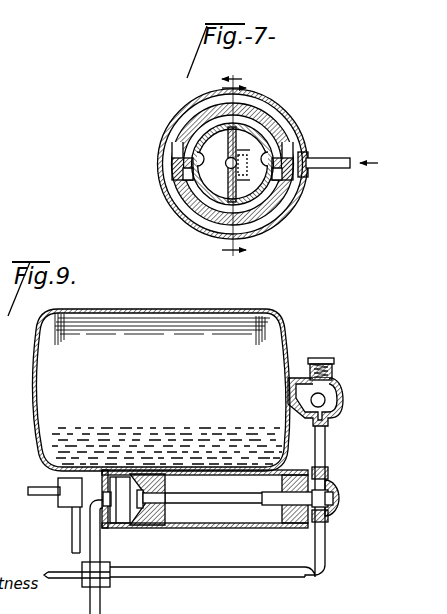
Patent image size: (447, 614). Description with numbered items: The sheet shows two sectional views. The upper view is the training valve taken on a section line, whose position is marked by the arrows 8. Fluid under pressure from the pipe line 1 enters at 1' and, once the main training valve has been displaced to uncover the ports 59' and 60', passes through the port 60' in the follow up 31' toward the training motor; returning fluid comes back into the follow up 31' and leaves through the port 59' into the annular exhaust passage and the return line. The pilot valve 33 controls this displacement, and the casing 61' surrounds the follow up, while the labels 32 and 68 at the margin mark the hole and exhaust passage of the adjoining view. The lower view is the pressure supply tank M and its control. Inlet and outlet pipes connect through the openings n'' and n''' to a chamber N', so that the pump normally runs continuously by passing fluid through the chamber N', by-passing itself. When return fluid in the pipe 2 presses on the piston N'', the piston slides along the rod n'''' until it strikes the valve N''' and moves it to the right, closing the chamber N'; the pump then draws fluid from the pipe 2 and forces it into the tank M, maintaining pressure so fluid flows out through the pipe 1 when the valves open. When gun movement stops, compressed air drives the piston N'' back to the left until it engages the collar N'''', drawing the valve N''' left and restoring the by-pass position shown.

In FIG. 7, the section line 8- 8 is at (234, 167).
In FIG. 7, the follow up 31' is at (248, 140).
In FIG. 7, the port 59' is at (161, 145).
In FIG. 7, the port 60' is at (303, 144).
In FIG. 7, the pilot valve 33 is at (228, 165).
In FIG. 7, the outer casing 61' is at (237, 164).
In FIG. 7, the inlet 1' is at (338, 171).
In FIG. 7, the element 32 is at (431, 180).
In FIG. 7, the element 68 is at (432, 215).
In FIG. 9, the tank M is at (257, 313).
In FIG. 9, the pipe 1 is at (55, 515).
In FIG. 9, the pipe 2 is at (103, 594).
In FIG. 9, the collar N'''' is at (205, 512).
In FIG. 9, the piston N'' is at (156, 515).
In FIG. 9, the rod n'''' is at (213, 522).
In FIG. 9, the valve N''' is at (286, 516).
In FIG. 9, the opening n'' is at (340, 469).
In FIG. 9, the chamber N' is at (340, 498).
In FIG. 9, the opening n''' is at (341, 520).